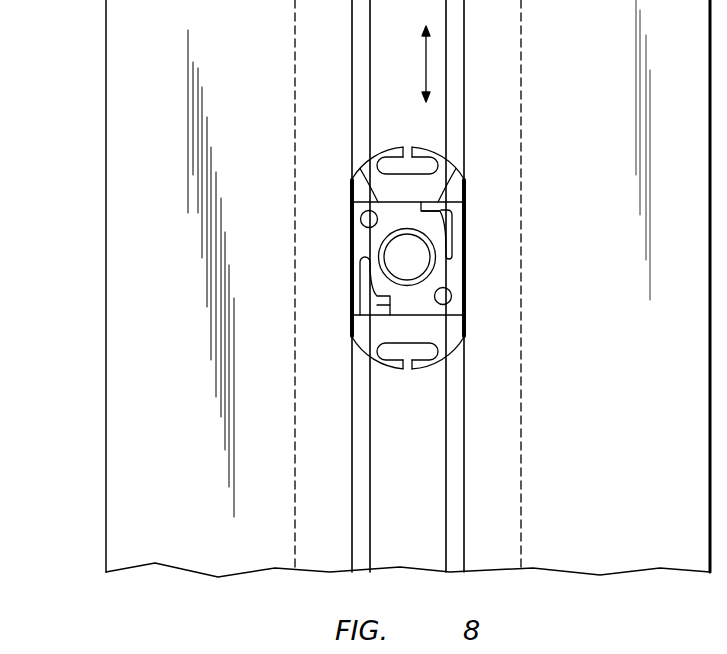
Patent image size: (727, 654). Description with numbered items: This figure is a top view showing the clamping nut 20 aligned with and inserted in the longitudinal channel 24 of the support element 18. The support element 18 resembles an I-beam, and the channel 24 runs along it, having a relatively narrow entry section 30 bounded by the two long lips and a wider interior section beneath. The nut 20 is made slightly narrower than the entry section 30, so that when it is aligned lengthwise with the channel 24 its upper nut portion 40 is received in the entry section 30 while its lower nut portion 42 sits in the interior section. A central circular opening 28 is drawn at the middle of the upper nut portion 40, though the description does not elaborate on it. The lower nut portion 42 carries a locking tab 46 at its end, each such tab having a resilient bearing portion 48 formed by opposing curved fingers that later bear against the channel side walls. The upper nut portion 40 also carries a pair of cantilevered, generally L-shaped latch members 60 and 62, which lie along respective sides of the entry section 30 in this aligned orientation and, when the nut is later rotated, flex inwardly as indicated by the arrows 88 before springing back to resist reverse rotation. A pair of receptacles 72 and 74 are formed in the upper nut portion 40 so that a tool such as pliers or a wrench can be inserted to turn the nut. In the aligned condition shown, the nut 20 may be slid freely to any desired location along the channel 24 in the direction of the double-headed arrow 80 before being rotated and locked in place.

The support element 18 is at (150, 366).
The clamping nut 20 is at (466, 290).
The longitudinal channel 24 is at (413, 548).
The hub opening 28 is at (424, 252).
The entry section 30 is at (462, 447).
The upper nut portion 40 is at (361, 167).
The lower nut portion 42 is at (424, 370).
The locking tab 46 is at (386, 150).
The resilient bearing portion 48 is at (397, 373).
The latch member 60 is at (358, 308).
The latch member 62 is at (468, 212).
The receptacle 72 is at (357, 209).
The receptacle 74 is at (449, 300).
The double-headed arrow 80 is at (428, 58).
The arrows 88 is at (431, 208).